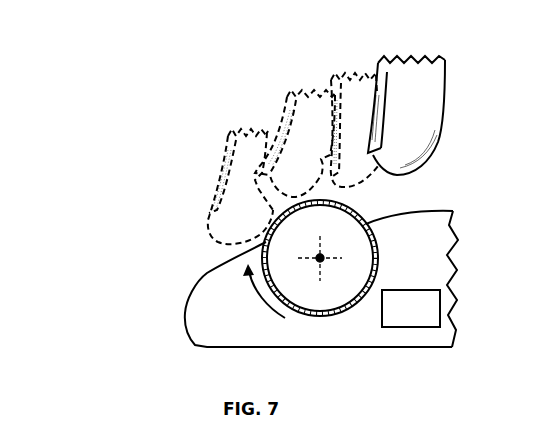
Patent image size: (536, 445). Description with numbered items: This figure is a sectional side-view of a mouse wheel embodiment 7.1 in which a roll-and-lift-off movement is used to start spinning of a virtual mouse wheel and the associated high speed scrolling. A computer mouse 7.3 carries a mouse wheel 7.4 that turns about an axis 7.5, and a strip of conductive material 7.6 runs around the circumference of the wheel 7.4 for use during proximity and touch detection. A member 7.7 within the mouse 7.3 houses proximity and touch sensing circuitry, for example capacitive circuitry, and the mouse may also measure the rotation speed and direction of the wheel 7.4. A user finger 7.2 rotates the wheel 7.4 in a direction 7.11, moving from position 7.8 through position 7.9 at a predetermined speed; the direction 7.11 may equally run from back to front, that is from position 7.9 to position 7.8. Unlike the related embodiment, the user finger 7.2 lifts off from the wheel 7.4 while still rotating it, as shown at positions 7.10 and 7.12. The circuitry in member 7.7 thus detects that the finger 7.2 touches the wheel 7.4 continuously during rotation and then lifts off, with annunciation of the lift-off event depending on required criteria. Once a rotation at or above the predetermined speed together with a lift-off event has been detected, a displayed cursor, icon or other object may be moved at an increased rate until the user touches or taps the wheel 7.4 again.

The mouse wheel embodiment 7.1 is at (67, 107).
The user finger 7.2 is at (406, 93).
The computer mouse 7.3 is at (297, 279).
The mouse wheel 7.4 is at (320, 258).
The axis 7.5 is at (328, 254).
The strip of conductive material 7.6 is at (344, 258).
The member 7.7 is at (411, 308).
The position 7.8 is at (236, 160).
The position 7.9 is at (295, 118).
The position 7.10 is at (354, 107).
The direction 7.11 is at (246, 299).
The position 7.12 is at (411, 37).